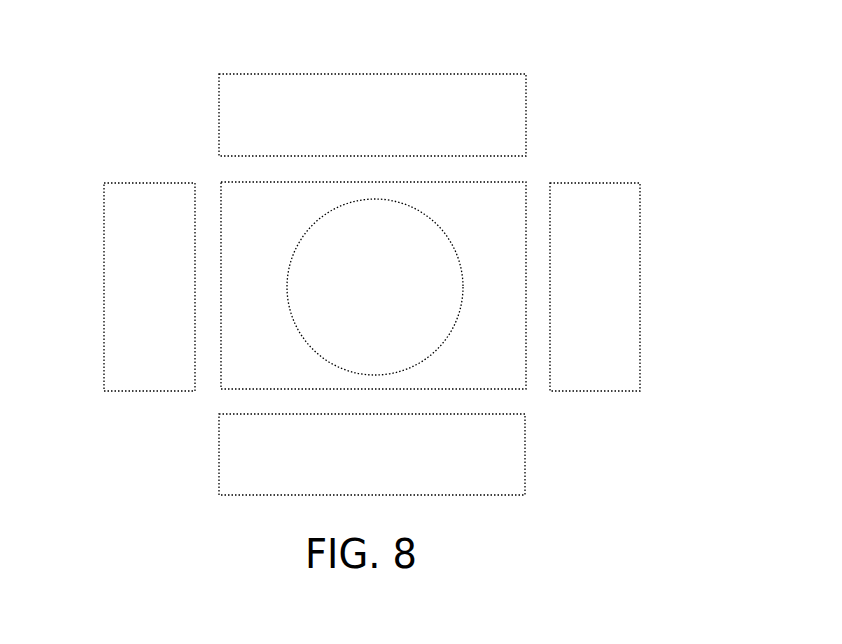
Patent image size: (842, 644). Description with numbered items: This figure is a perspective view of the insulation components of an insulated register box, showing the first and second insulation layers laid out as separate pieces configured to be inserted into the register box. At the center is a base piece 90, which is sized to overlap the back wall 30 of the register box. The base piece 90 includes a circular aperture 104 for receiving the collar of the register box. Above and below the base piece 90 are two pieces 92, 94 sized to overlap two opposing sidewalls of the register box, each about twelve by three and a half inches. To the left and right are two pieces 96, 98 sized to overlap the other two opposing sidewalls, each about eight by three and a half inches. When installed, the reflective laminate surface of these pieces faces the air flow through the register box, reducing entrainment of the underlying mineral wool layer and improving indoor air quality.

The back wall 30 is at (238, 31).
The base piece 90 is at (507, 203).
The sidewall piece 92 is at (434, 105).
The sidewall piece 94 is at (497, 451).
The sidewall piece 96 is at (118, 214).
The sidewall piece 98 is at (630, 236).
The aperture 104 is at (333, 332).